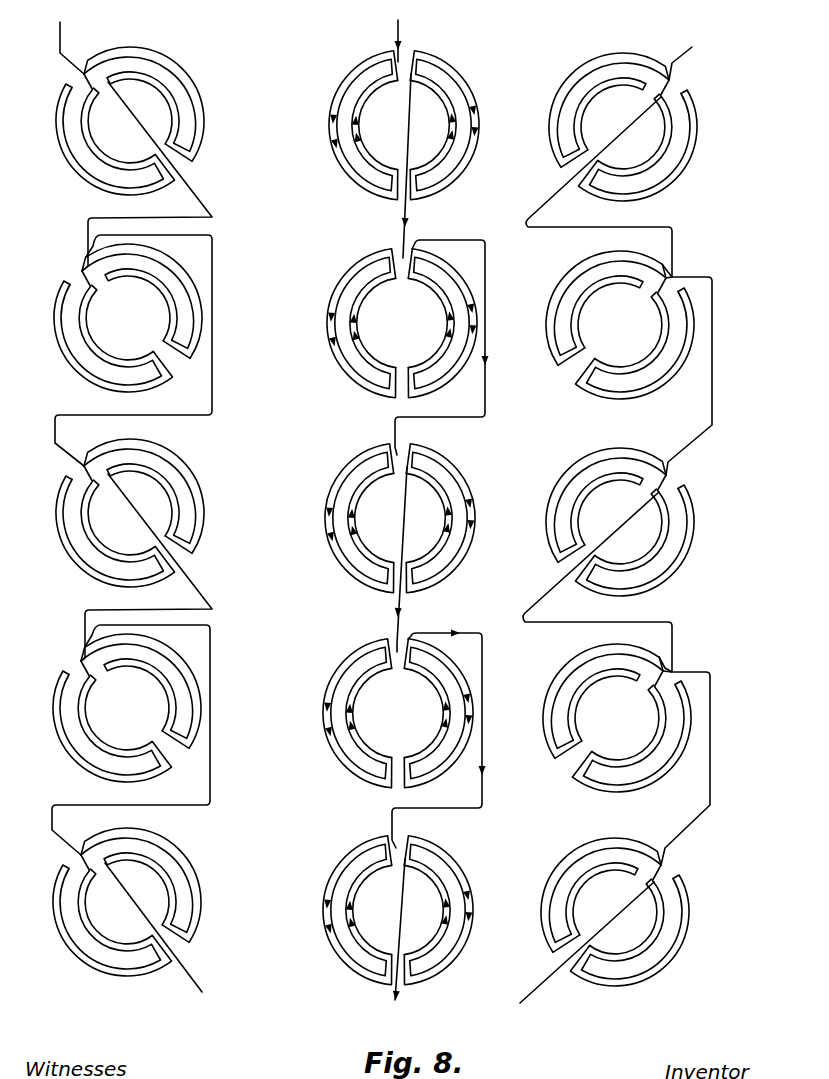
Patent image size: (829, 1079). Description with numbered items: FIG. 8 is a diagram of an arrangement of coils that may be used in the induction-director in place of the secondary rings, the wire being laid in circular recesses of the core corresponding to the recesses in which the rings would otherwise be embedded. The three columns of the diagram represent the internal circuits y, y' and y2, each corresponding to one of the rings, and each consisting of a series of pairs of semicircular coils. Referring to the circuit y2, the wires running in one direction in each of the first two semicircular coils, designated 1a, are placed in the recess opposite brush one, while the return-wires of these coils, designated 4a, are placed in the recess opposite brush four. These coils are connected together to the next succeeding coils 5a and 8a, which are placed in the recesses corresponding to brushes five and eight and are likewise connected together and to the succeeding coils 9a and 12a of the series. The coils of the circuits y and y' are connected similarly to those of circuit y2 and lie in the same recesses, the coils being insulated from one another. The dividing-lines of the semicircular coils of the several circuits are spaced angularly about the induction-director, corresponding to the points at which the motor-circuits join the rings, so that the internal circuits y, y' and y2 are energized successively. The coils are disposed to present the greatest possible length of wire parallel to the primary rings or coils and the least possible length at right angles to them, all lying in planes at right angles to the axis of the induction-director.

The coil 4a is at (700, 96).
The coil 1a is at (187, 120).
The coil 8a is at (687, 376).
The coil 5a is at (83, 316).
The coil 12a is at (203, 503).
The coil 9a is at (660, 540).
The internal circuit y is at (138, 507).
The internal circuit y2 is at (458, 182).
The internal circuit y' is at (624, 525).